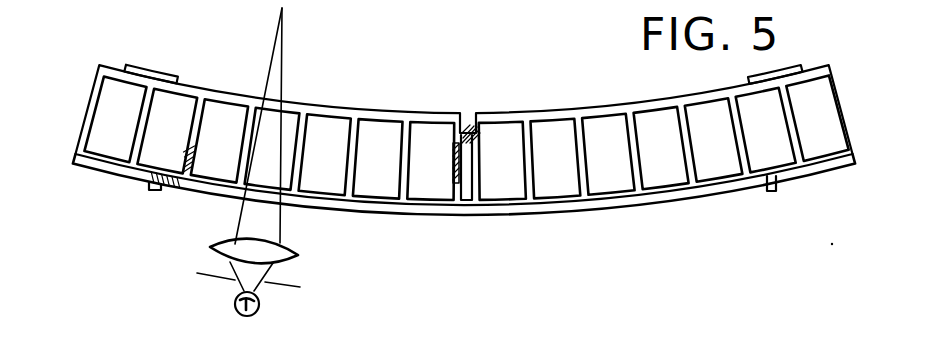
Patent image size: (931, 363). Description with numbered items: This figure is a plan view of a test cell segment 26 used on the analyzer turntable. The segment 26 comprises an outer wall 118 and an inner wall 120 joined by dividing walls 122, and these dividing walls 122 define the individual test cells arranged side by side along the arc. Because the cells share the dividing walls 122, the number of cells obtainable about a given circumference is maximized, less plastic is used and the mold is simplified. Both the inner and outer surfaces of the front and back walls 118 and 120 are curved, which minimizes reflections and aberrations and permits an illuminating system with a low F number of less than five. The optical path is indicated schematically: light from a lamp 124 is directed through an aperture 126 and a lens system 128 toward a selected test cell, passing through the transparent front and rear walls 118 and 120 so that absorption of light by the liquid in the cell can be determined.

The inner wall 120 is at (382, 112).
The dividing walls 122 is at (574, 145).
The outer wall 118 is at (454, 219).
The test cell segment 26 is at (537, 219).
The aperture 126 is at (282, 285).
The lens system 128 is at (293, 257).
The lamp 124 is at (233, 312).